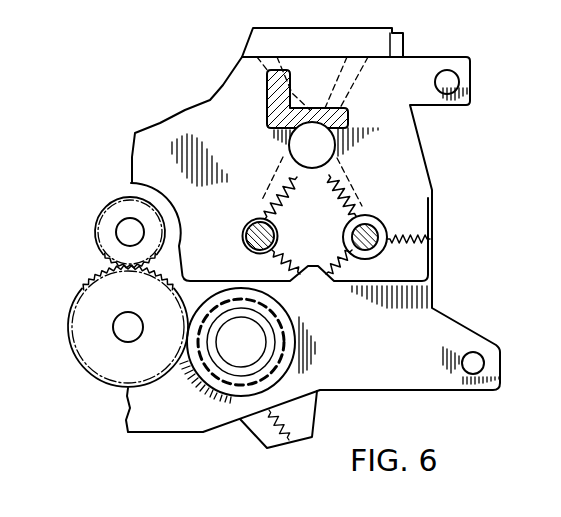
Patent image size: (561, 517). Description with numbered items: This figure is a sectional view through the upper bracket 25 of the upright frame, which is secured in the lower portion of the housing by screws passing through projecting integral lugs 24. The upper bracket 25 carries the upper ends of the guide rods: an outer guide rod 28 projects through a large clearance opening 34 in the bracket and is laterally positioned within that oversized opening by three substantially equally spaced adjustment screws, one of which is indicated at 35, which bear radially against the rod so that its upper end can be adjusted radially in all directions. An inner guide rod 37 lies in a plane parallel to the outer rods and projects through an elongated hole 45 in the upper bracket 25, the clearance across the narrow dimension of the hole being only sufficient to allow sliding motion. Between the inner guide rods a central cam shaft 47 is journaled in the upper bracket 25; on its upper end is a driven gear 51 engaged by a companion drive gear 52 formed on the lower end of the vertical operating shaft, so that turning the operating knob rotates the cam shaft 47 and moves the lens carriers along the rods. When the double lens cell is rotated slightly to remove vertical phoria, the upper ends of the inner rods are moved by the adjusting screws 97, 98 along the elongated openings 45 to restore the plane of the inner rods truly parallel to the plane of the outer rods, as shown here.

The projecting integral lugs 24 is at (459, 81).
The upper bracket 25 is at (415, 165).
The outer guide rod 28 is at (386, 229).
The large clearance openings 34 is at (368, 216).
The adjustment screws 35 is at (347, 181).
The inner guide rod 37 is at (247, 243).
The elongated holes 45 is at (253, 221).
The cam shaft 47 is at (123, 231).
The driven gear 51 is at (105, 244).
The drive gear 52 is at (80, 316).
The adjusting screw 97 is at (283, 178).
The adjusting screw 98 is at (299, 251).